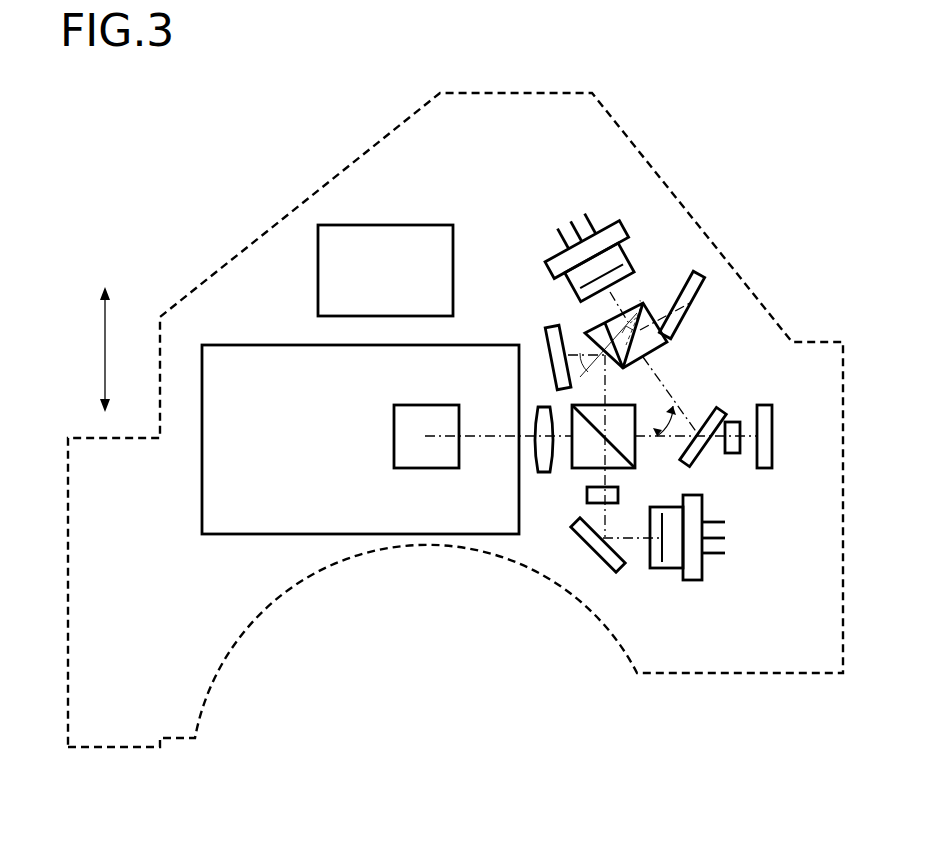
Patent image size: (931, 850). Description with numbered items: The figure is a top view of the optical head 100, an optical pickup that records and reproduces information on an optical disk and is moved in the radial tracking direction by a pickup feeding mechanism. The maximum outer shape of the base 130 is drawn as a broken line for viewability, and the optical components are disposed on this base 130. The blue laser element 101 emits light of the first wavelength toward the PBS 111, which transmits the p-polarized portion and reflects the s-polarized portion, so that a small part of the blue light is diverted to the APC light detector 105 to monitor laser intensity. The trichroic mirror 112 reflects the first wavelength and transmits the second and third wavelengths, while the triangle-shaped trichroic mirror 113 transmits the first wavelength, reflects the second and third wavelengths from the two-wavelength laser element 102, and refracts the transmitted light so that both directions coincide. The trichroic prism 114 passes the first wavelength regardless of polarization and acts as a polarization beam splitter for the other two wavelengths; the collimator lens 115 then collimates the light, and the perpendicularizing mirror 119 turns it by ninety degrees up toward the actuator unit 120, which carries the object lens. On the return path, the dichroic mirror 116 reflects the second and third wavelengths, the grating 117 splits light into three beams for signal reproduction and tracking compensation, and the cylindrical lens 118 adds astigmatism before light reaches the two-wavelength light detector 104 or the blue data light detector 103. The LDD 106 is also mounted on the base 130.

The optical head 100 is at (150, 168).
The base 130 is at (258, 237).
The actuator unit 120 is at (240, 345).
The perpendicularizing mirror 119 is at (394, 440).
The LDD 106 is at (395, 224).
The blue laser element 101 is at (580, 303).
The two-wavelength laser element 102 is at (666, 569).
The blue data light detector 103 is at (670, 274).
The two-wavelength light detector 104 is at (762, 470).
The APC light detector 105 is at (548, 342).
The polarization beam splitter 111 is at (664, 342).
The trichroic mirror 112 is at (692, 411).
The trichroic mirror 113 is at (614, 368).
The trichroic prism 114 is at (621, 470).
The collimator lens 115 is at (545, 473).
The dichroic mirror 116 is at (581, 537).
The grating 117 is at (586, 496).
The cylindrical lens 118 is at (731, 455).